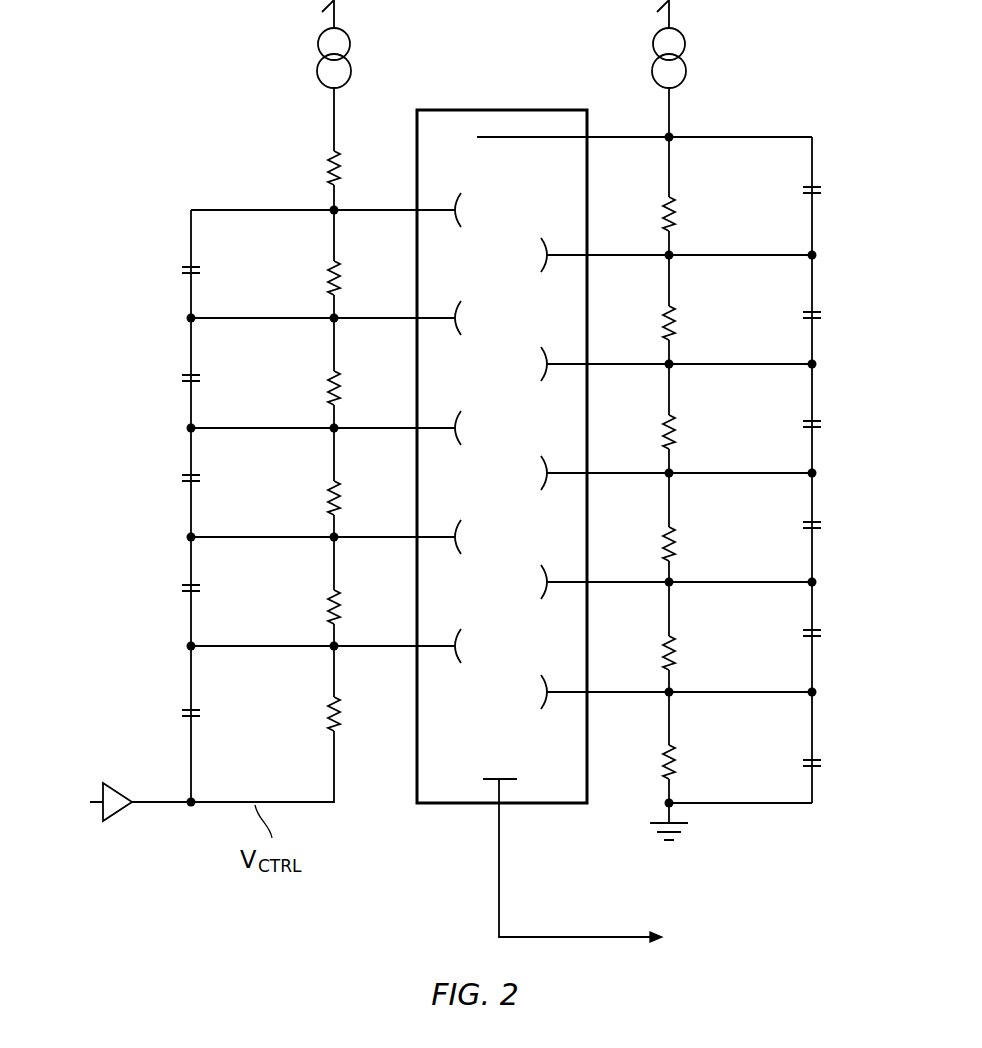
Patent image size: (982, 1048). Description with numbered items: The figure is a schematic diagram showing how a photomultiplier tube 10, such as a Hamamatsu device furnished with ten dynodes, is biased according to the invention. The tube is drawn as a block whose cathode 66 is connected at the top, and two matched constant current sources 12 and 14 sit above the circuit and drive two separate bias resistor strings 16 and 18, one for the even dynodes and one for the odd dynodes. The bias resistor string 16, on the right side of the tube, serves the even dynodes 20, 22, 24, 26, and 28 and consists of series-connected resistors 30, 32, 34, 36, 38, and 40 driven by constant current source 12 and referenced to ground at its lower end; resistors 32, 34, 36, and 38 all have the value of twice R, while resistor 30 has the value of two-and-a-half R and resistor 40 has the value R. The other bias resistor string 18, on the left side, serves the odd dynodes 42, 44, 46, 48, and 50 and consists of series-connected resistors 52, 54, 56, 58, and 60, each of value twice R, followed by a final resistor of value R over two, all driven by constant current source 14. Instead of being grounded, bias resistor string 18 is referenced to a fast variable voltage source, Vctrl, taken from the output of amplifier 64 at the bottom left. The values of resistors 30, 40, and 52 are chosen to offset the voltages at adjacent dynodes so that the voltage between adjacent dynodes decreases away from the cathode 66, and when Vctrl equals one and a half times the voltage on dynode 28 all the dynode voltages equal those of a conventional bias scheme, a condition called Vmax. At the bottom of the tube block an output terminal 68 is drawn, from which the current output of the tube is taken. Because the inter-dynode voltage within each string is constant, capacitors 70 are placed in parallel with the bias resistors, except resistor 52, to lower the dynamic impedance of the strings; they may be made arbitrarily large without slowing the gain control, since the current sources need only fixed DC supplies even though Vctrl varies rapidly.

The photomultiplier tube 10 is at (497, 110).
The constant current source 12 is at (655, 58).
The constant current source 14 is at (348, 58).
The bias resistor string 16 is at (825, 364).
The bias resistor string 18 is at (98, 431).
The even dynode 20 is at (537, 255).
The even dynode 22 is at (537, 364).
The even dynode 24 is at (537, 473).
The even dynode 26 is at (537, 582).
The even dynode 28 is at (537, 692).
The resistor 30 is at (653, 220).
The resistor 32 is at (653, 328).
The resistor 34 is at (653, 437).
The resistor 36 is at (653, 549).
The resistor 38 is at (653, 658).
The resistor 40 is at (653, 767).
The odd dynode 42 is at (468, 210).
The odd dynode 44 is at (466, 318).
The odd dynode 46 is at (466, 428).
The odd dynode 48 is at (466, 537).
The odd dynode 50 is at (466, 646).
The resistor 52 is at (353, 167).
The resistor 54 is at (353, 282).
The resistor 56 is at (353, 391).
The resistor 58 is at (353, 501).
The resistor 60 is at (353, 610).
The amplifier 64 is at (120, 822).
The cathode 66 is at (508, 138).
The output terminal 68 is at (498, 775).
The capacitors 70 is at (180, 268).